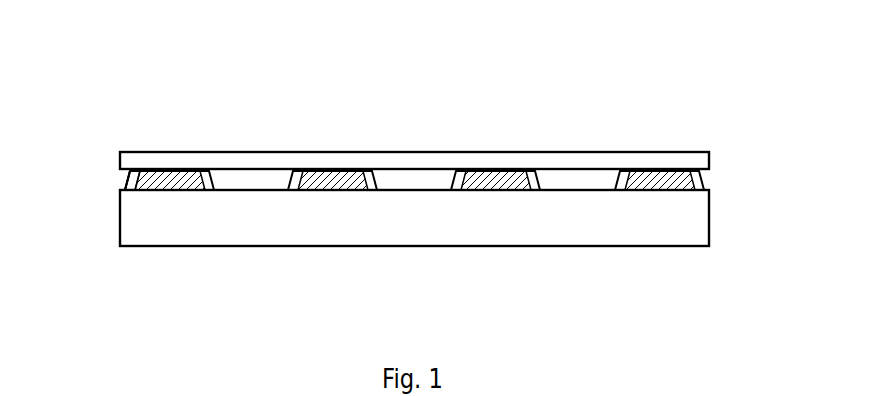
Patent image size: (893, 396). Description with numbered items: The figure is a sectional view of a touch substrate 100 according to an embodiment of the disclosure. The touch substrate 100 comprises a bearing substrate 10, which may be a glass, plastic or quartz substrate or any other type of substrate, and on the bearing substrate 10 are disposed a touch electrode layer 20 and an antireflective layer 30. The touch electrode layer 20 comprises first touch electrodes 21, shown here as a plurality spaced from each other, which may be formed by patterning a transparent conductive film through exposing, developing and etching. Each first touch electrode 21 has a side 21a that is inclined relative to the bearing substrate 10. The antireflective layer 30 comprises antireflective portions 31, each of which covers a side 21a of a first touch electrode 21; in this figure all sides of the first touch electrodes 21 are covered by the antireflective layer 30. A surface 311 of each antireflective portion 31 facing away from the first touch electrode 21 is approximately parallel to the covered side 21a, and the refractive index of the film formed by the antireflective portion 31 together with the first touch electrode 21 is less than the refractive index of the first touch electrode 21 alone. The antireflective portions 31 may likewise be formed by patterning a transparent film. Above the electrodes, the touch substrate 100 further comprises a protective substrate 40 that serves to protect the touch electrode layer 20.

The touch substrate 100 is at (772, 36).
The bearing substrate 10 is at (442, 244).
The touch electrode layer 20 is at (563, 297).
The first touch electrode 21 is at (415, 235).
The side of the first touch electrode 21a is at (127, 183).
The antireflective layer 30 is at (668, 105).
The antireflective portion 31 is at (414, 145).
The surface of the antireflective portion 311 is at (128, 177).
The protective substrate 40 is at (697, 162).